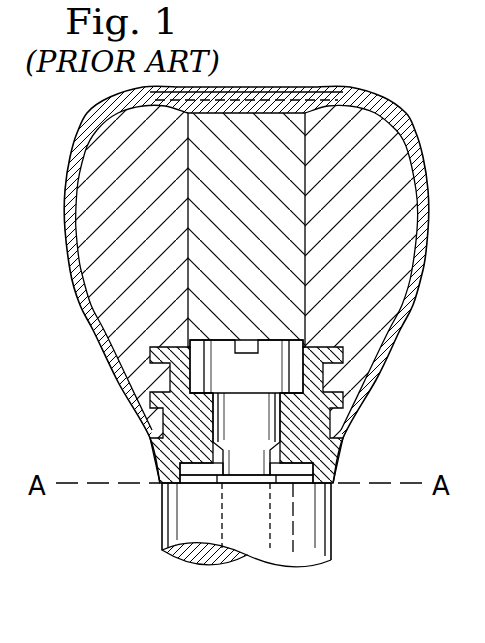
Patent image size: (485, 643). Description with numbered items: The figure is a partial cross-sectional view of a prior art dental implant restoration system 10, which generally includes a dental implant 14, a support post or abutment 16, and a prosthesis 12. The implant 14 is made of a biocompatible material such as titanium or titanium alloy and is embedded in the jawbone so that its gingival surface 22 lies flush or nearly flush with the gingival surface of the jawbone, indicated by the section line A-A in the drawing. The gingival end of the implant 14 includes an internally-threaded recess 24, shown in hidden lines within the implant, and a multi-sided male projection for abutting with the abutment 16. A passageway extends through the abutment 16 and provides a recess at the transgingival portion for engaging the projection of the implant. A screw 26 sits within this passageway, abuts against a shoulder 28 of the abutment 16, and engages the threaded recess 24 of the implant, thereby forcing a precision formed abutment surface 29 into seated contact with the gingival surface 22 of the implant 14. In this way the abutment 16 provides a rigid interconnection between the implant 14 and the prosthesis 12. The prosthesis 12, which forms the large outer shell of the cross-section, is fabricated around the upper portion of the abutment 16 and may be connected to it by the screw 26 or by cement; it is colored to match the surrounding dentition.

The dental implant restoration system 10 is at (333, 62).
The prosthesis 12 is at (408, 107).
The dental implant 14 is at (167, 537).
The abutment 16 is at (339, 463).
The gingival surface 22 is at (290, 478).
The internally-threaded recess 24 is at (268, 548).
The screw 26 is at (258, 382).
The shoulder 28 is at (203, 388).
The abutment surface 29 is at (172, 483).